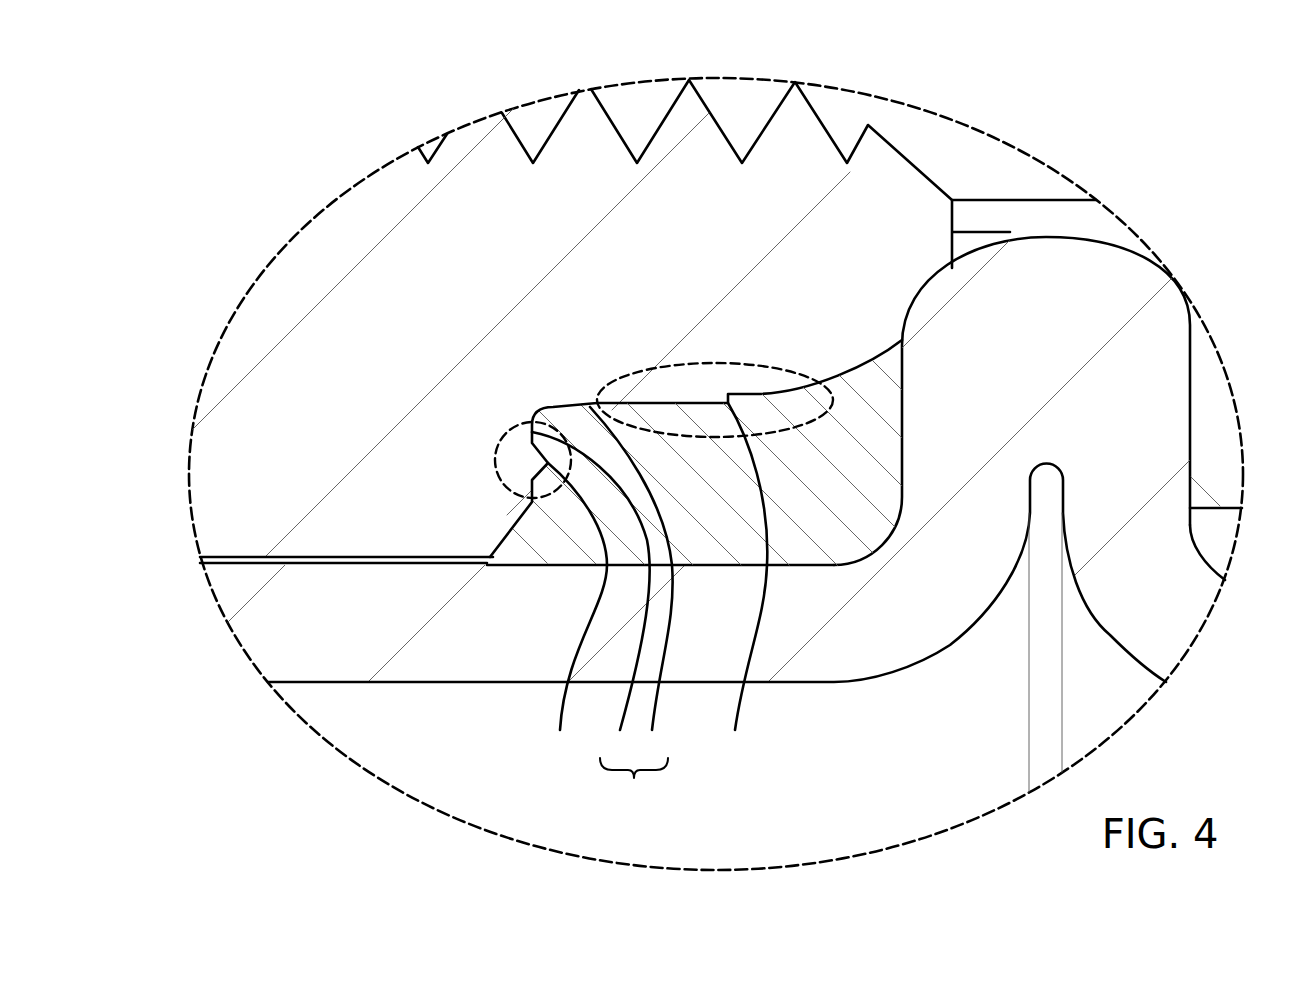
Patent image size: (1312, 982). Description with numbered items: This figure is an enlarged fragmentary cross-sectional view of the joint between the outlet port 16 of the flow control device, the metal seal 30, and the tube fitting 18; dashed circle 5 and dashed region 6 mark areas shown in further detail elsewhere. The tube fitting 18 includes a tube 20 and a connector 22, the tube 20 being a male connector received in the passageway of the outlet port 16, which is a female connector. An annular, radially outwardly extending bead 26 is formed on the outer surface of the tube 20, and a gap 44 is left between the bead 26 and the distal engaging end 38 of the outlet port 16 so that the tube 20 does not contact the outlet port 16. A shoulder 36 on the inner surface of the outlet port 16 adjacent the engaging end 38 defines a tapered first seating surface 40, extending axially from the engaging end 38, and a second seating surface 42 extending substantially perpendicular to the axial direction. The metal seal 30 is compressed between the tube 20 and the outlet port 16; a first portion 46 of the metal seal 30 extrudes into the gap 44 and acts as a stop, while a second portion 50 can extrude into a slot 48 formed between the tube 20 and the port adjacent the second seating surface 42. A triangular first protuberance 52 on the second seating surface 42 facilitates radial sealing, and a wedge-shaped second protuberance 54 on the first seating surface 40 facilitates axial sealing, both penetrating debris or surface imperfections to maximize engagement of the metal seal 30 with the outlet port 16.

The detail view circle of FIG. 5 is at (497, 463).
The detail view region of FIG. 6 is at (597, 403).
The outlet port 16 is at (641, 282).
The tube fitting 18 is at (1216, 398).
The tube 20 is at (704, 636).
The connector 22 is at (946, 169).
The bead 26 is at (1183, 300).
The metal seal 30 is at (669, 514).
The shoulder 36 is at (634, 784).
The engaging end 38 is at (955, 222).
The first seating surface 40 is at (631, 583).
The second seating surface 42 is at (591, 596).
The gap 44 is at (950, 288).
The first portion 46 is at (925, 315).
The slot 48 is at (382, 563).
The second portion 50 is at (483, 563).
The first protuberance 52 is at (576, 611).
The second protuberance 54 is at (744, 581).